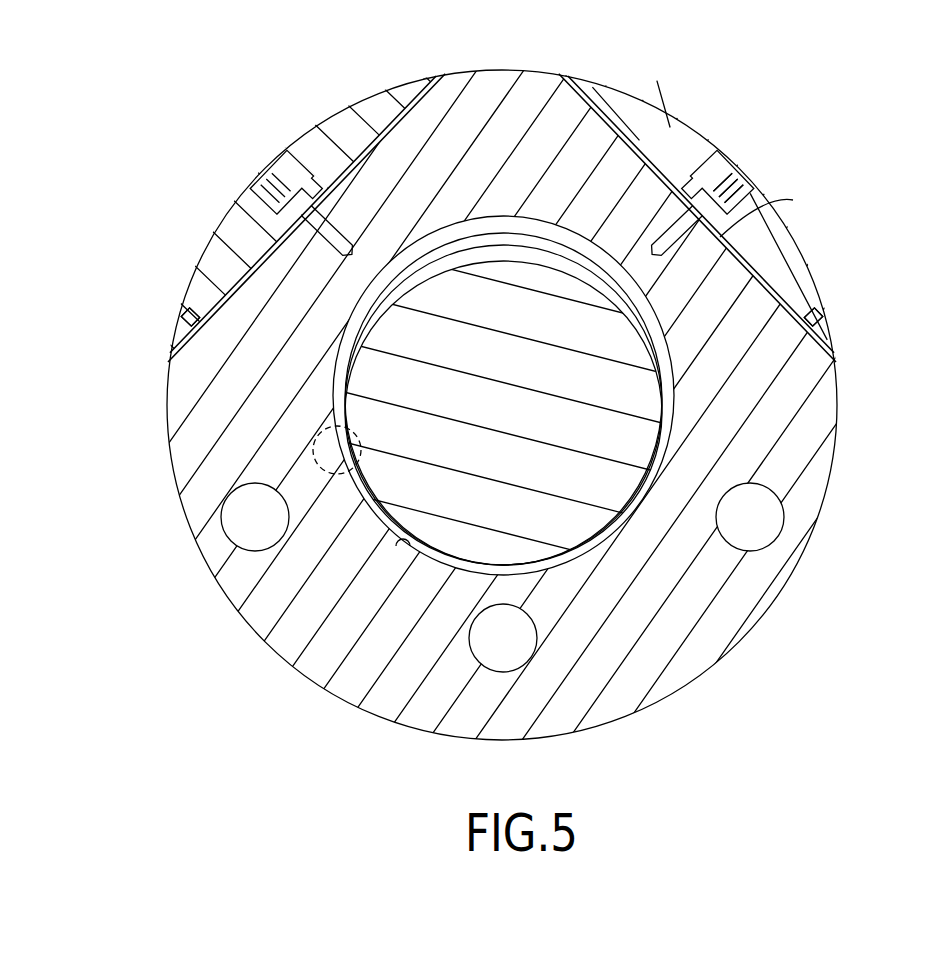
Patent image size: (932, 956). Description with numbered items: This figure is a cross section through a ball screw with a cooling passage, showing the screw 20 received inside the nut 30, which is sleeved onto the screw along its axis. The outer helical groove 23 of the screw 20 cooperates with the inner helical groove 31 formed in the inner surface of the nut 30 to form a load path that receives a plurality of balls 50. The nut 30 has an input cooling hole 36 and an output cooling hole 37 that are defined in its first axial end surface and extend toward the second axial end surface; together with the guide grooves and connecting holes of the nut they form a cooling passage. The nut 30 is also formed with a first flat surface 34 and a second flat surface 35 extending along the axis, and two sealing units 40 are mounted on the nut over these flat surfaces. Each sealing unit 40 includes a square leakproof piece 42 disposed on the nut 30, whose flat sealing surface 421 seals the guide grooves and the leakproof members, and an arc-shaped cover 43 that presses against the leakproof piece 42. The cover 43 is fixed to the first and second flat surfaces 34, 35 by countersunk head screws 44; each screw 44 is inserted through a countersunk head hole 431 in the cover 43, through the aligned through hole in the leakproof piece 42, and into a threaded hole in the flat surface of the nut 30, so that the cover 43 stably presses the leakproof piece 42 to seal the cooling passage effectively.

The screw 20 is at (336, 605).
The outer helical groove 23 is at (440, 552).
The nut 30 is at (765, 620).
The inner helical groove 31 is at (388, 522).
The first flat surface 34 is at (808, 322).
The second flat surface 35 is at (190, 320).
The input cooling hole 36 is at (768, 519).
The output cooling hole 37 is at (240, 532).
The sealing unit 40 is at (310, 125).
The leakproof piece 42 is at (207, 246).
The cover 43 is at (798, 270).
The countersunk head screw 44 is at (288, 192).
The ball 50 is at (335, 437).
The flat sealing surface 421 is at (808, 322).
The countersunk head hole 431 is at (747, 178).